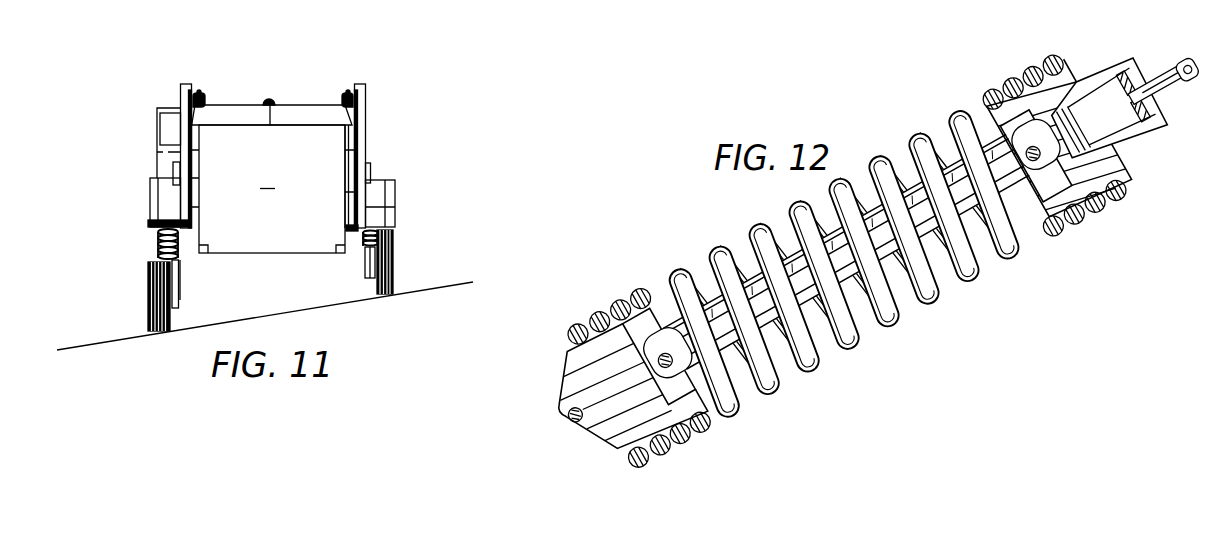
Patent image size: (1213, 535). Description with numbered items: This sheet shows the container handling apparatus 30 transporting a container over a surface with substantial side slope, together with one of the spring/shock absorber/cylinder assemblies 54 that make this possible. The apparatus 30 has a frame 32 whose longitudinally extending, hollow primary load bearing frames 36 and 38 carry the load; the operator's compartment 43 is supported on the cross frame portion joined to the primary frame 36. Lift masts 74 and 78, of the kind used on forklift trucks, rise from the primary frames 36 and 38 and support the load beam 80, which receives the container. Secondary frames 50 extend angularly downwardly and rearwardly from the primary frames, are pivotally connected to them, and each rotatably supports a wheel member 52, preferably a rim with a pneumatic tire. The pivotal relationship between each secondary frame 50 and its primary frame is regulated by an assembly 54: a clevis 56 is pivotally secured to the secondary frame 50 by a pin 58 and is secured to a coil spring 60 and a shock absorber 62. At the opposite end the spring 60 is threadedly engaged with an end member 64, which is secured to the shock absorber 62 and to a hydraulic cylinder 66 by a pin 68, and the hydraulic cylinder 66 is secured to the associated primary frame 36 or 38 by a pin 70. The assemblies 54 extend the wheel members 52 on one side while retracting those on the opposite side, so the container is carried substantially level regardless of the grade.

In FIG. 11, the container handling apparatus 30 is at (128, 165).
In FIG. 11, the frame 32 is at (148, 224).
In FIG. 11, the primary load bearing frame 36 is at (150, 208).
In FIG. 11, the primary load bearing frame 38 is at (395, 208).
In FIG. 11, the operator's compartment 43 is at (156, 134).
In FIG. 11, the secondary frame 50 is at (180, 277).
In FIG. 11, the wheel member 52 is at (150, 298).
In FIG. 11, the spring/shock absorber/cylinder assembly 54 is at (182, 240).
In FIG. 12, the spring/shock absorber/cylinder assembly 54 is at (917, 340).
In FIG. 12, the clevis 56 is at (566, 377).
In FIG. 12, the pin 58 is at (575, 422).
In FIG. 12, the coil spring 60 is at (762, 226).
In FIG. 12, the shock absorber 62 is at (853, 287).
In FIG. 12, the end member 64 is at (1123, 177).
In FIG. 12, the hydraulic cylinder 66 is at (1118, 68).
In FIG. 12, the pin 68 is at (1037, 160).
In FIG. 12, the pin 70 is at (1188, 78).
In FIG. 11, the lift mast 74 is at (181, 97).
In FIG. 11, the lift mast 78 is at (367, 98).
In FIG. 11, the load beam 80 is at (286, 103).